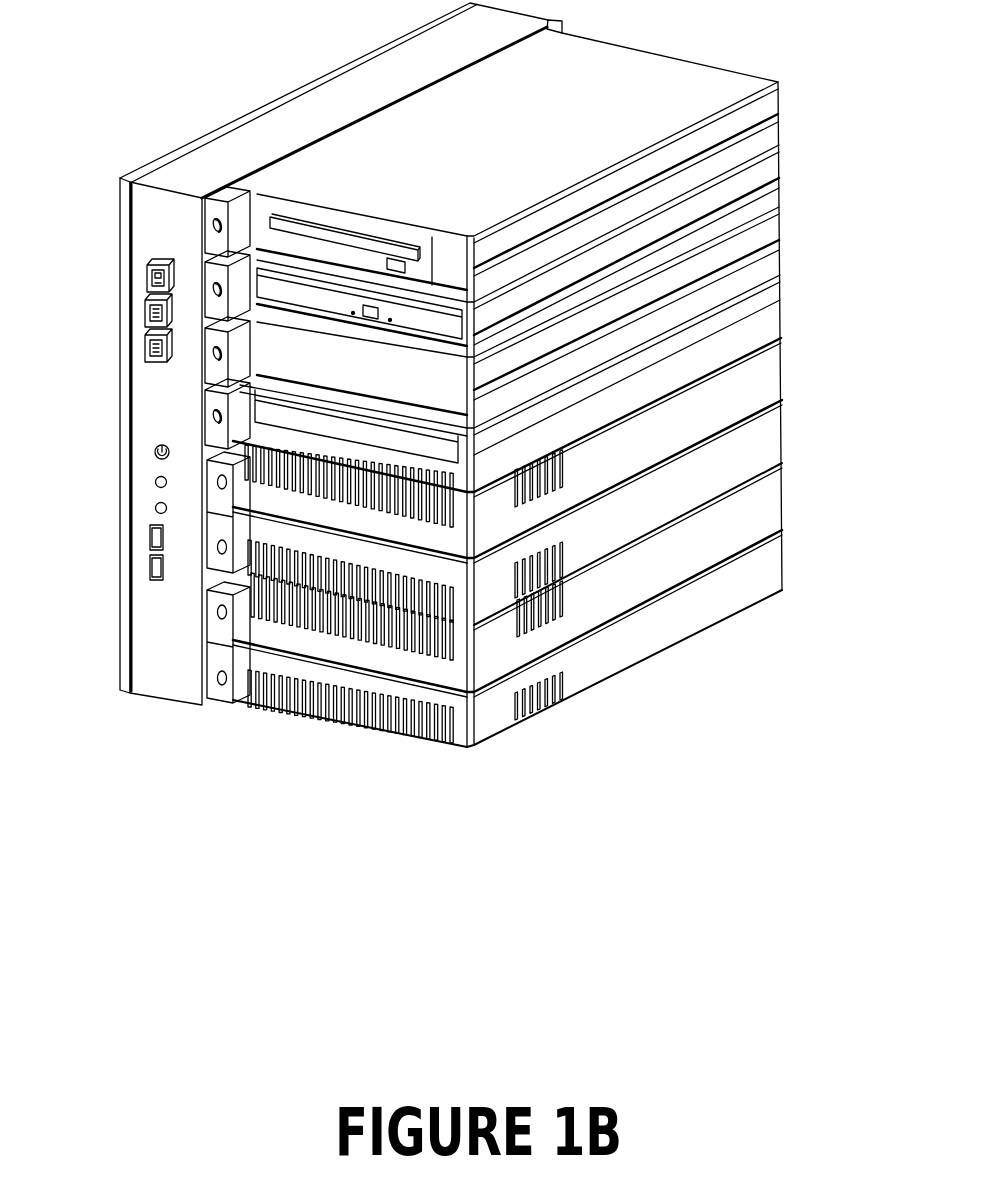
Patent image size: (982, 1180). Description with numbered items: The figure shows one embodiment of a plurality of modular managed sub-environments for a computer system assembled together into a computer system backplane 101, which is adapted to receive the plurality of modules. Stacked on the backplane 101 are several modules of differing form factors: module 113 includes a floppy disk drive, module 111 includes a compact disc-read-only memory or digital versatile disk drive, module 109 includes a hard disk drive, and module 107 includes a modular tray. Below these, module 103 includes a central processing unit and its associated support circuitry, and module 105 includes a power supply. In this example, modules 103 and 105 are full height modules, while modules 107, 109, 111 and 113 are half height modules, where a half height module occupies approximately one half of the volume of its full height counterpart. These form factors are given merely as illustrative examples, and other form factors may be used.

The computer system backplane 101 is at (120, 353).
The module (floppy disk drive) 113 is at (780, 100).
The module (CD-ROM or DVD drive) 111 is at (780, 165).
The module (hard disk drive) 109 is at (780, 235).
The module (modular tray) 107 is at (780, 297).
The module (central processing unit) 103 is at (787, 400).
The module (power supply) 105 is at (787, 527).